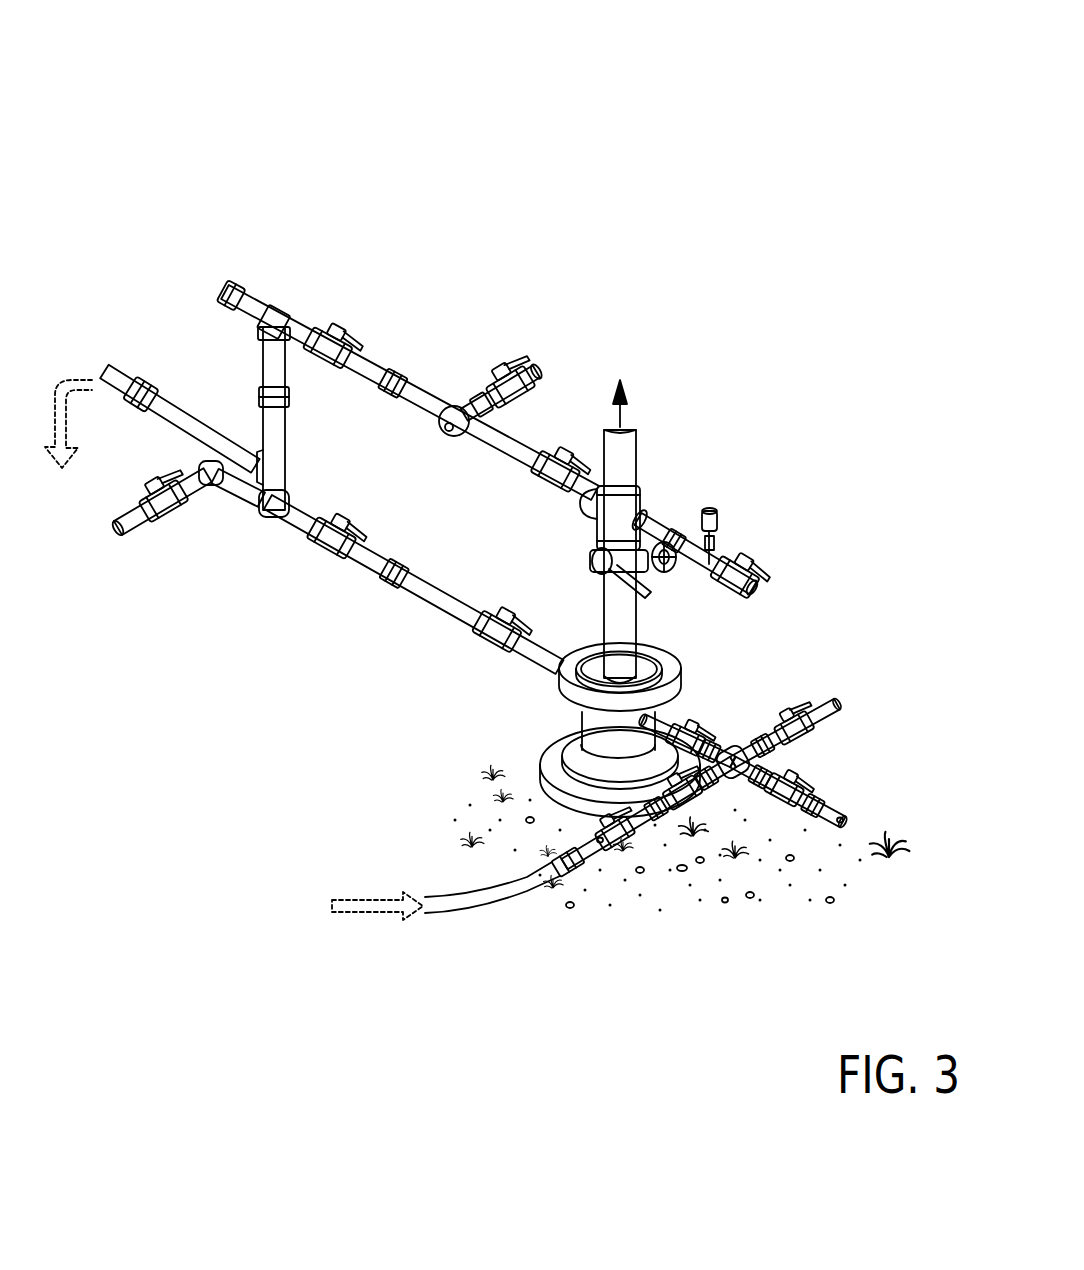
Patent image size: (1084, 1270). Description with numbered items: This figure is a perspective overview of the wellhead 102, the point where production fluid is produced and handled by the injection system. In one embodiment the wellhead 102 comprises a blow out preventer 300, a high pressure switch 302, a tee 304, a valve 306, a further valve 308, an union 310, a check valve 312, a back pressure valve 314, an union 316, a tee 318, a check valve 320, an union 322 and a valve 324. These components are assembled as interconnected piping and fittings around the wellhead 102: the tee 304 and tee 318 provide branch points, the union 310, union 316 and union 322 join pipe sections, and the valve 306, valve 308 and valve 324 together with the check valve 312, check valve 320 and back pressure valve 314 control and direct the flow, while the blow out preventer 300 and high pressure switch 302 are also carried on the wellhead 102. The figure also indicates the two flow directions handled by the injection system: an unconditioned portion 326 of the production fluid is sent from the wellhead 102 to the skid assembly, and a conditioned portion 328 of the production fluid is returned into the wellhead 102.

The wellhead 102 is at (815, 128).
The blow out preventer 300 is at (640, 578).
The high pressure switch 302 is at (715, 515).
The tee 304 is at (640, 496).
The valve 306 is at (557, 460).
The valve 308 is at (513, 372).
The union 310 is at (396, 384).
The check valve 312 is at (326, 328).
The back pressure valve 314 is at (228, 290).
The union 316 is at (267, 447).
The tee 318 is at (257, 460).
The check valve 320 is at (323, 537).
The union 322 is at (388, 578).
The valve 324 is at (497, 633).
The unconditioned portion 326 is at (72, 462).
The conditioned portion 328 is at (377, 910).